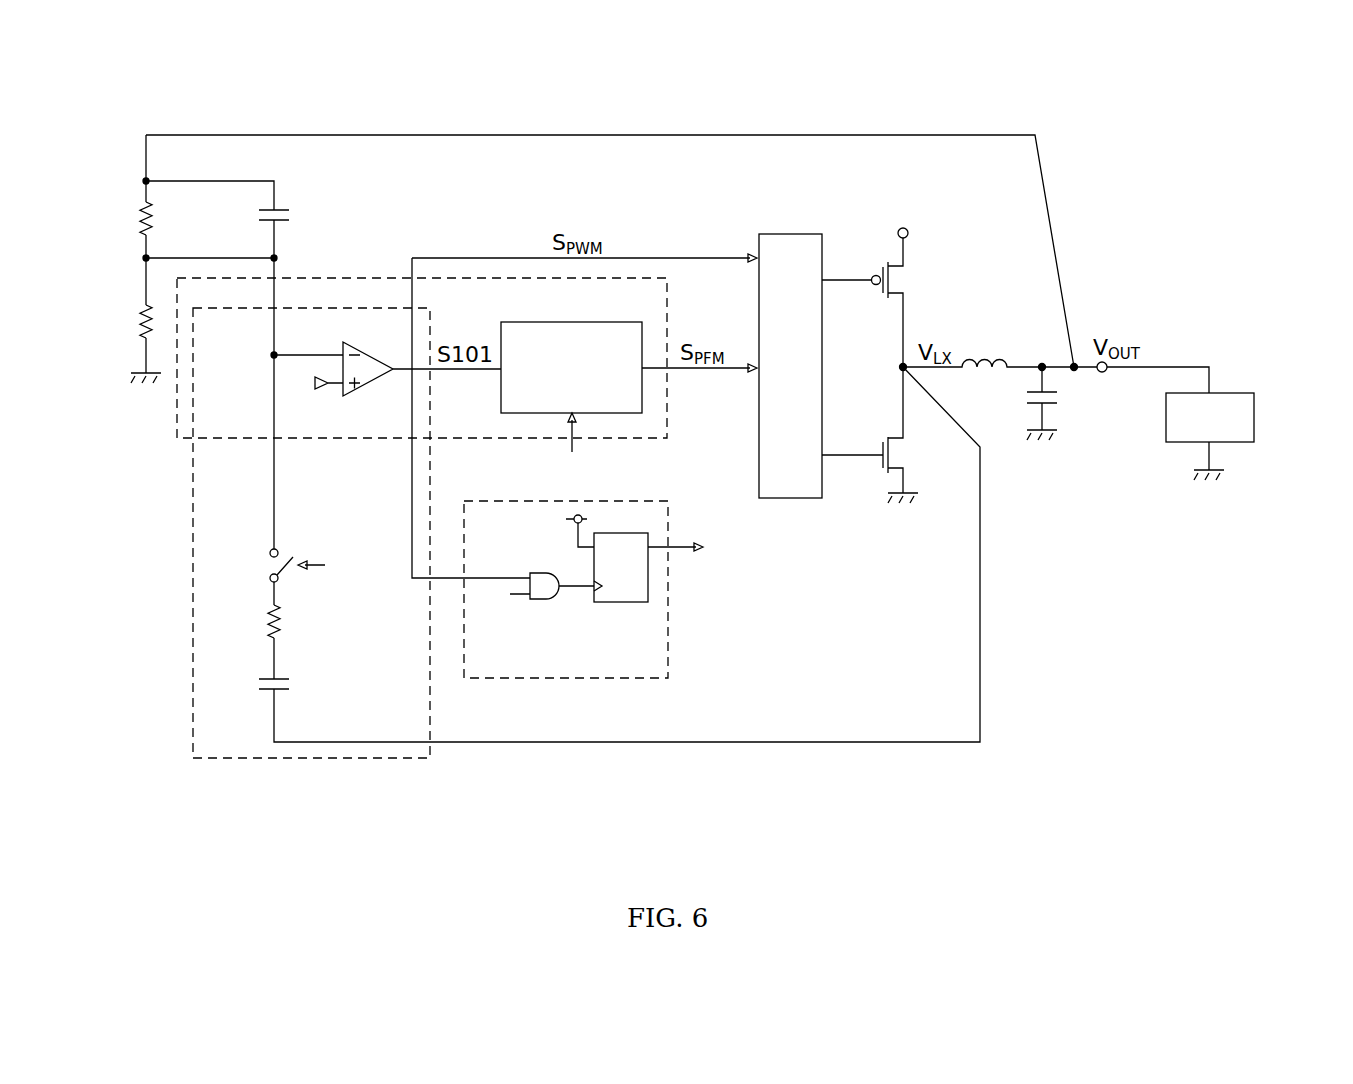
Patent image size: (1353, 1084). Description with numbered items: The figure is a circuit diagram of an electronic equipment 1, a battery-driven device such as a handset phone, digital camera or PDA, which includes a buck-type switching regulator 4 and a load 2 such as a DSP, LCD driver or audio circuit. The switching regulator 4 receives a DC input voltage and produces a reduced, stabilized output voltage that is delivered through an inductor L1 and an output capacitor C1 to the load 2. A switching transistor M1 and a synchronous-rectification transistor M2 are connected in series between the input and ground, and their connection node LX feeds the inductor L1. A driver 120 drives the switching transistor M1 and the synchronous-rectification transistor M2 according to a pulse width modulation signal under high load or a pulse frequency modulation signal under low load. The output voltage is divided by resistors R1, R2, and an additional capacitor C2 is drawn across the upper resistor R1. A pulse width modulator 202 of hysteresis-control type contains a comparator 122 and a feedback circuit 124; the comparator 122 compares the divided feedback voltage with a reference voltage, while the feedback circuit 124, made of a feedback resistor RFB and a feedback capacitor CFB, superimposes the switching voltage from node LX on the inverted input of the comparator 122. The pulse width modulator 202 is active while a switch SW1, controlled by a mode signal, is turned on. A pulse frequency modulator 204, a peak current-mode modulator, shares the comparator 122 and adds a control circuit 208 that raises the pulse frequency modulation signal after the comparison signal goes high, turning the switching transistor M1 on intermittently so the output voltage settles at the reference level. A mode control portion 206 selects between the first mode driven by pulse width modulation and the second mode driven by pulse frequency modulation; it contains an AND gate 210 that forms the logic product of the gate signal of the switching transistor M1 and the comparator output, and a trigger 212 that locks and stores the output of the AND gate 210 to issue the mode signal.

The electronic equipment 1 is at (1228, 143).
The load 2 is at (1200, 423).
The switching regulator 4 is at (1121, 808).
The driver 120 is at (787, 234).
The comparator 122 is at (378, 394).
The feedback circuit 124 is at (336, 656).
The pulse width modulator 202 is at (350, 758).
The pulse frequency modulator 204 is at (457, 358).
The mode control portion 206 is at (552, 678).
The control circuit 208 is at (578, 322).
The AND gate 210 is at (545, 600).
The trigger 212 is at (625, 602).
The resistor R1 is at (122, 220).
The resistor R2 is at (127, 343).
The output capacitor C1 is at (1069, 403).
The capacitor C2 is at (246, 221).
The inductor L1 is at (988, 361).
The switching transistor M1 is at (898, 284).
The synchronous-rectification transistor M2 is at (898, 435).
The switch SW1 is at (272, 566).
The feedback resistor RFB is at (309, 642).
The feedback capacitor CFB is at (304, 691).